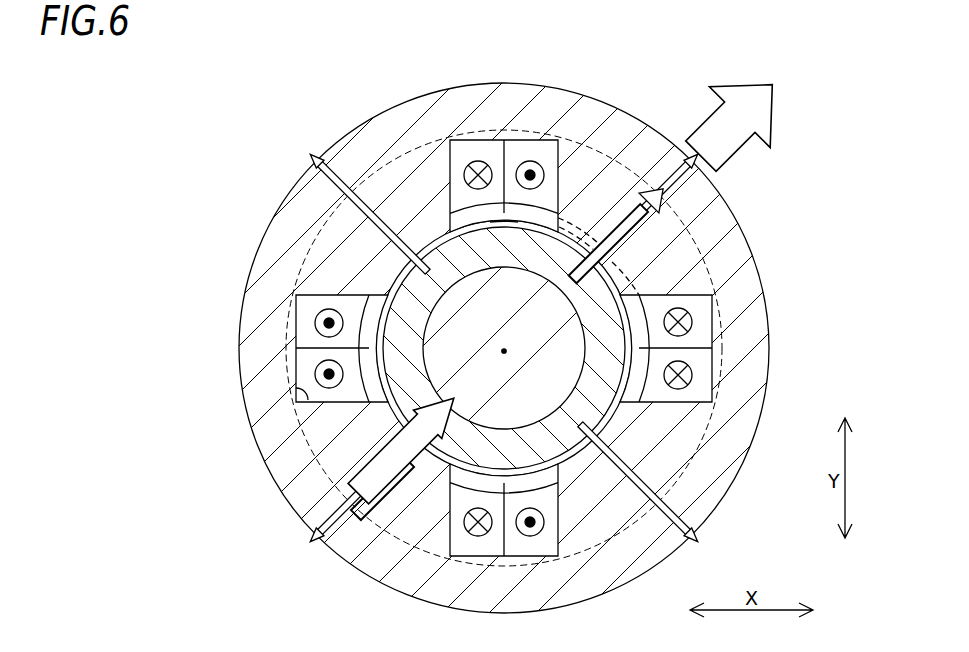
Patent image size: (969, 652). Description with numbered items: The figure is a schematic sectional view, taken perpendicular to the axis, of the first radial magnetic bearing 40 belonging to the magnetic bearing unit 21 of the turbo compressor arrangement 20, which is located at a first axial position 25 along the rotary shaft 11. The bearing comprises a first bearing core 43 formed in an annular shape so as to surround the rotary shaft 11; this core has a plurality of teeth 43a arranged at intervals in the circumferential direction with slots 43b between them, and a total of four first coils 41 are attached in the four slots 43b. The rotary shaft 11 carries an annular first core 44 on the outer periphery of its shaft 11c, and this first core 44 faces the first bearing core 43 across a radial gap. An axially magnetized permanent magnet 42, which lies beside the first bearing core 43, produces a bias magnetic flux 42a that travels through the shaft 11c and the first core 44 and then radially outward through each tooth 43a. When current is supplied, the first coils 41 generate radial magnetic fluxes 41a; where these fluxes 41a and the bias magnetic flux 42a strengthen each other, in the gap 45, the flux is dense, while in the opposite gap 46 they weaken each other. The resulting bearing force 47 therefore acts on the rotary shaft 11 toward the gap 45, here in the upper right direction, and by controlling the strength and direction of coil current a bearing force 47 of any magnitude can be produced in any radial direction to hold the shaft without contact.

The wire feeding device 20 is at (484, 340).
The magnetic bearing unit 21 is at (484, 340).
The first axial position 25 is at (484, 340).
The first radial magnetic bearing 40 is at (210, 116).
The first bearing core 43 is at (272, 263).
The teeth 43a is at (387, 265).
The slots 43b is at (318, 388).
The first core 44 is at (506, 268).
The rotary shaft 11 is at (642, 358).
The shaft 11c is at (530, 340).
The first coils 41 is at (692, 322).
The magnetic fluxes 41a is at (630, 205).
The magnet 42 is at (330, 470).
The bias magnetic flux 42a is at (326, 170).
The gap 45 is at (640, 252).
The gap 46 is at (395, 432).
The bearing force 47 is at (762, 125).